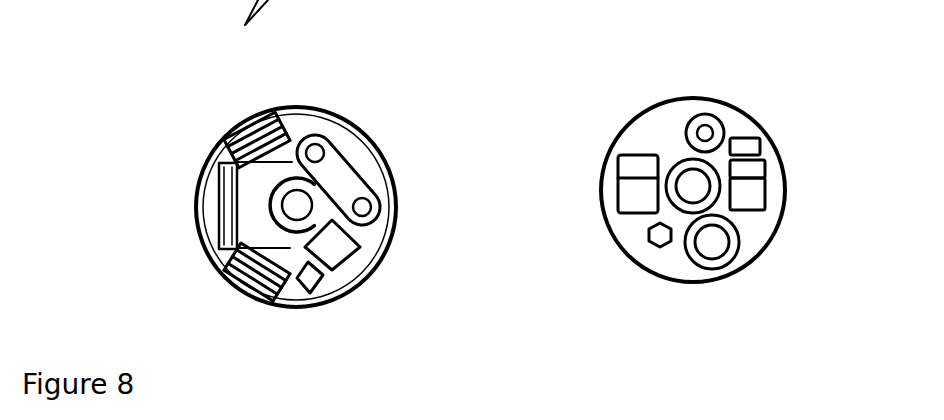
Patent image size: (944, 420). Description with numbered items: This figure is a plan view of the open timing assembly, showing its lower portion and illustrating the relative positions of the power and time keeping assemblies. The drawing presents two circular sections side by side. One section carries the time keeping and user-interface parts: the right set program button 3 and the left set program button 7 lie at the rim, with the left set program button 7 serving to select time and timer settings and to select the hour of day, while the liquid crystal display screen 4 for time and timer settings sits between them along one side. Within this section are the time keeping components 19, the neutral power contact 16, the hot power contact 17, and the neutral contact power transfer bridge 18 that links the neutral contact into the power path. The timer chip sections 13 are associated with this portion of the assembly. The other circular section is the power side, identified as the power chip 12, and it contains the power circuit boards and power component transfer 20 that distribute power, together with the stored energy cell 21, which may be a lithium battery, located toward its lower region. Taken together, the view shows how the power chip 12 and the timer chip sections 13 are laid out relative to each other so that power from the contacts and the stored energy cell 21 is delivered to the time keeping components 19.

The right set program button 3 is at (241, 296).
The liquid crystal display screen 4 is at (208, 203).
The left set program button 7 is at (247, 118).
The power chip 12 is at (768, 227).
The timer chip sections 13 is at (375, 283).
The neutral power contact 16 is at (690, 128).
The hot power contact 17 is at (316, 200).
The neutral contact power transfer bridge 18 is at (380, 212).
The time keeping components 19 is at (257, 184).
The power circuit boards and power component transfer 20 is at (630, 191).
The stored energy cell 21 is at (713, 262).